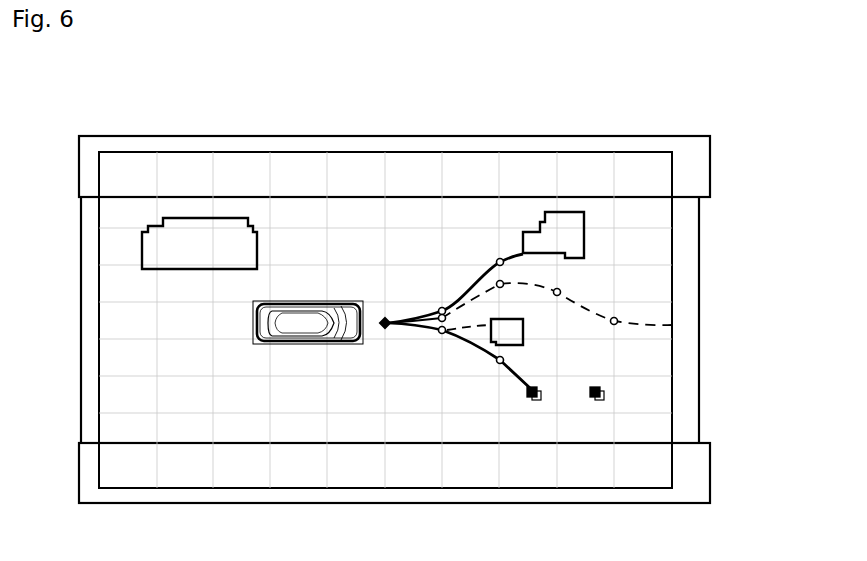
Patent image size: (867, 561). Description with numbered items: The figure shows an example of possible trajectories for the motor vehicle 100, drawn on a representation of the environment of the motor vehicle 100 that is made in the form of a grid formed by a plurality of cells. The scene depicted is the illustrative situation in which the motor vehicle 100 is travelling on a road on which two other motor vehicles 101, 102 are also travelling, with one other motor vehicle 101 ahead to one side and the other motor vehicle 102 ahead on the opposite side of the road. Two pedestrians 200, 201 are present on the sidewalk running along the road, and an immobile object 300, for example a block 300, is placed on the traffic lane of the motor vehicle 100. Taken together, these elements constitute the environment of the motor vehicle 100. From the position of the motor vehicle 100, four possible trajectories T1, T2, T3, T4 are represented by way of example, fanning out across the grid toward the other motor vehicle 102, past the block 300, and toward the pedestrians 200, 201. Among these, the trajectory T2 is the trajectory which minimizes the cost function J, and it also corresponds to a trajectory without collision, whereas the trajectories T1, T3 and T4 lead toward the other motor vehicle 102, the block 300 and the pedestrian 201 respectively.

The motor vehicle 100 is at (299, 323).
The other motor vehicle 101 is at (188, 218).
The other motor vehicle 102 is at (571, 220).
The immobile object 300 is at (517, 331).
The pedestrian 200 is at (605, 395).
The pedestrian 201 is at (542, 395).
The possible trajectory T1 is at (512, 255).
The possible trajectory T2 is at (654, 323).
The possible trajectory T3 is at (460, 335).
The possible trajectory T4 is at (508, 375).